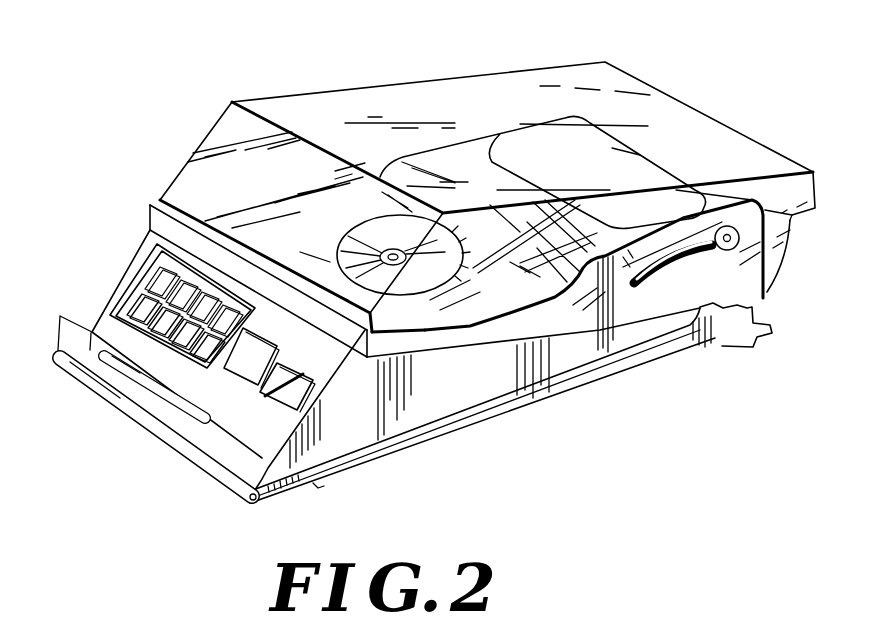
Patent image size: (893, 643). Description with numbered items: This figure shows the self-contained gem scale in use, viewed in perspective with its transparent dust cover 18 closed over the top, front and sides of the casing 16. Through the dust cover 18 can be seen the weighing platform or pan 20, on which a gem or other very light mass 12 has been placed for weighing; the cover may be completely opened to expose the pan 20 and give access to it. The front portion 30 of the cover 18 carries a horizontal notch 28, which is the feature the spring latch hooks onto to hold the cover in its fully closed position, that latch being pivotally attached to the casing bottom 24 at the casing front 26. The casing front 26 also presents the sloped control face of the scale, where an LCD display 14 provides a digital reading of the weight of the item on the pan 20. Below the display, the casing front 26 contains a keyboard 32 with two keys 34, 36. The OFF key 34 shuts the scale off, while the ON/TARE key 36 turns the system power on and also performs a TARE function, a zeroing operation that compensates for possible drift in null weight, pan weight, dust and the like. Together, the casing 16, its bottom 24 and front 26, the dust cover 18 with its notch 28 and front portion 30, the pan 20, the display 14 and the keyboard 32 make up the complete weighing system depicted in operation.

The mass 12 is at (377, 223).
The LCD display 14 is at (140, 282).
The casing 16 is at (443, 407).
The transparent dust cover 18 is at (512, 97).
The weighing platform or pan 20 is at (443, 272).
The casing bottom 24 is at (320, 487).
The casing front 26 is at (130, 436).
The horizontal notch 28 is at (152, 204).
The front portion of cover 30 is at (173, 172).
The keyboard 32 is at (223, 422).
The OFF key 34 is at (248, 370).
The ON/TARE key 36 is at (274, 398).